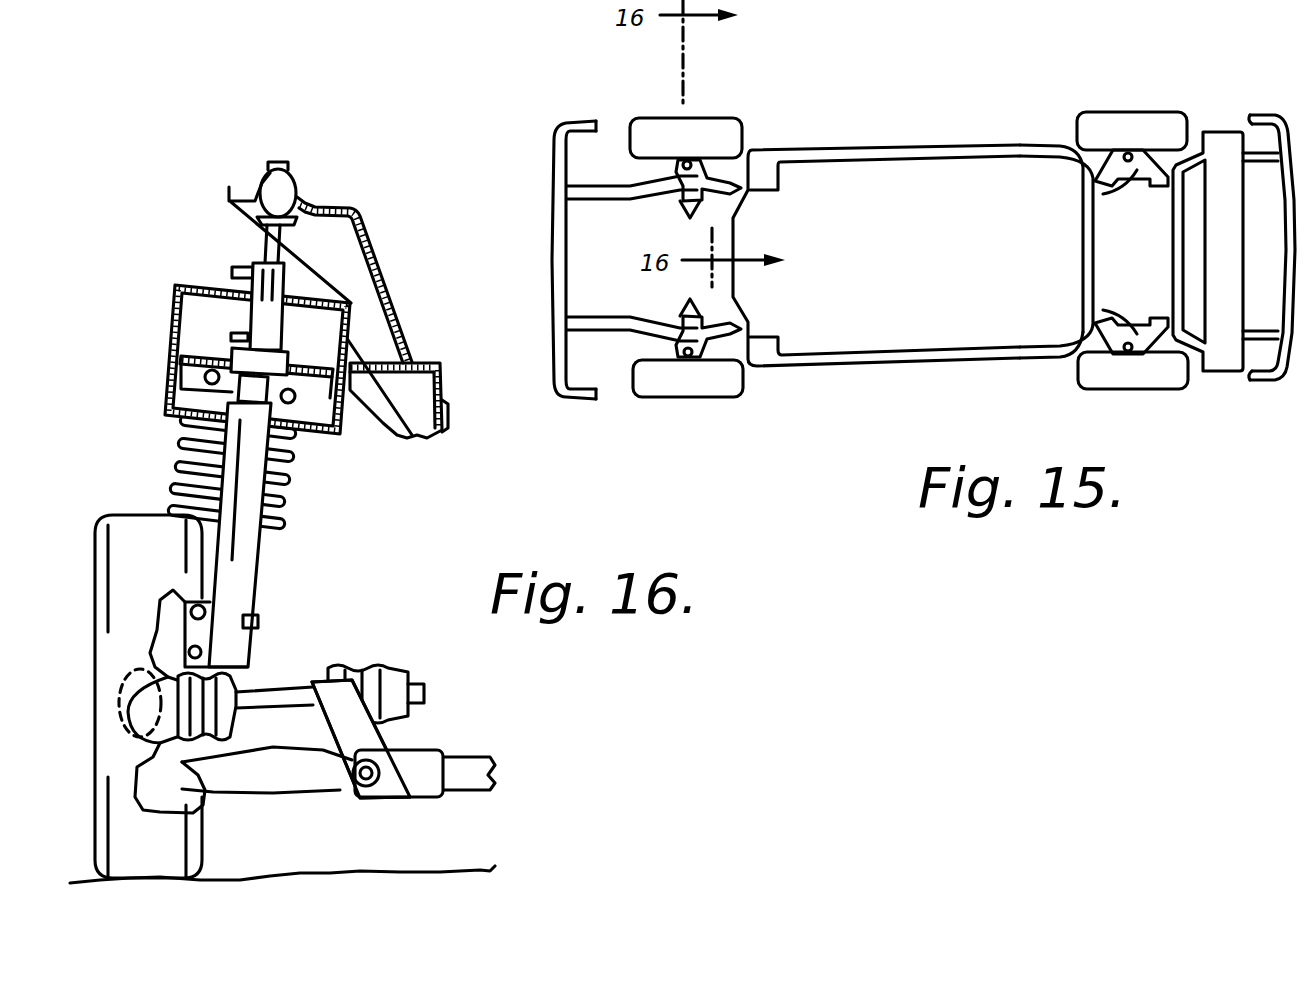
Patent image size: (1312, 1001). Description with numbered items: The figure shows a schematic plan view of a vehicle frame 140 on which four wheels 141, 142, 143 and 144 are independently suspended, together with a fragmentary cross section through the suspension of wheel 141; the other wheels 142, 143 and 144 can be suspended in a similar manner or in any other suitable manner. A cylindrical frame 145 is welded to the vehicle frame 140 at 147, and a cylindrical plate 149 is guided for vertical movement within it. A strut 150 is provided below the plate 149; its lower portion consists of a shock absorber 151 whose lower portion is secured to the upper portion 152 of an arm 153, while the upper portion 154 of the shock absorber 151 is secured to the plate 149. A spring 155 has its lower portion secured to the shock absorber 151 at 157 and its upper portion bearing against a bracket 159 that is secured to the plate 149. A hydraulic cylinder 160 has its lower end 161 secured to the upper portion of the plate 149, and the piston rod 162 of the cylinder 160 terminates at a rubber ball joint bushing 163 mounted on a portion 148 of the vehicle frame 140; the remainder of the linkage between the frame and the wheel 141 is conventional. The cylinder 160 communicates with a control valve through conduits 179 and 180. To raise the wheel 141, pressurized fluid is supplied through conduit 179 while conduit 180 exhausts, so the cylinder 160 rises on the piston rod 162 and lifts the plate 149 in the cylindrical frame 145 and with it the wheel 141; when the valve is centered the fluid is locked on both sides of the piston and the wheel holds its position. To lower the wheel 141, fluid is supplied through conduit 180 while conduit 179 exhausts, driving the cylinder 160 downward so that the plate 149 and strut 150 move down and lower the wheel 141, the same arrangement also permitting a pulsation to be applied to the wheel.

In FIG. 15, the vehicle frame 140 is at (886, 358).
In FIG. 16, the vehicle frame 140 is at (449, 412).
In FIG. 15, the wheel 141 is at (653, 124).
In FIG. 16, the wheel 141 is at (121, 606).
In FIG. 15, the wheel 142 is at (648, 388).
In FIG. 15, the wheel 143 is at (1166, 62).
In FIG. 15, the wheel 144 is at (1156, 384).
In FIG. 16, the cylindrical frame 145 is at (176, 326).
In FIG. 16, the weld location 147 is at (368, 405).
In FIG. 15, the portion of frame 148 is at (690, 201).
In FIG. 16, the portion of frame 148 is at (375, 251).
In FIG. 16, the cylindrical plate 149 is at (196, 344).
In FIG. 16, the strut 150 is at (262, 596).
In FIG. 16, the shock absorber 151 is at (262, 572).
In FIG. 16, the upper portion of arm 152 is at (256, 630).
In FIG. 16, the arm 153 is at (150, 645).
In FIG. 16, the upper portion of shock absorber 154 is at (164, 415).
In FIG. 16, the spring 155 is at (288, 508).
In FIG. 16, the spring attachment location 157 is at (262, 546).
In FIG. 16, the bracket 159 is at (181, 366).
In FIG. 16, the hydraulic cylinder 160 is at (176, 294).
In FIG. 16, the lower end of cylinder 161 is at (300, 348).
In FIG. 16, the piston rod 162 is at (266, 250).
In FIG. 16, the rubber ball joint bushing 163 is at (300, 190).
In FIG. 16, the conduit 179 is at (232, 272).
In FIG. 16, the conduit 180 is at (232, 336).